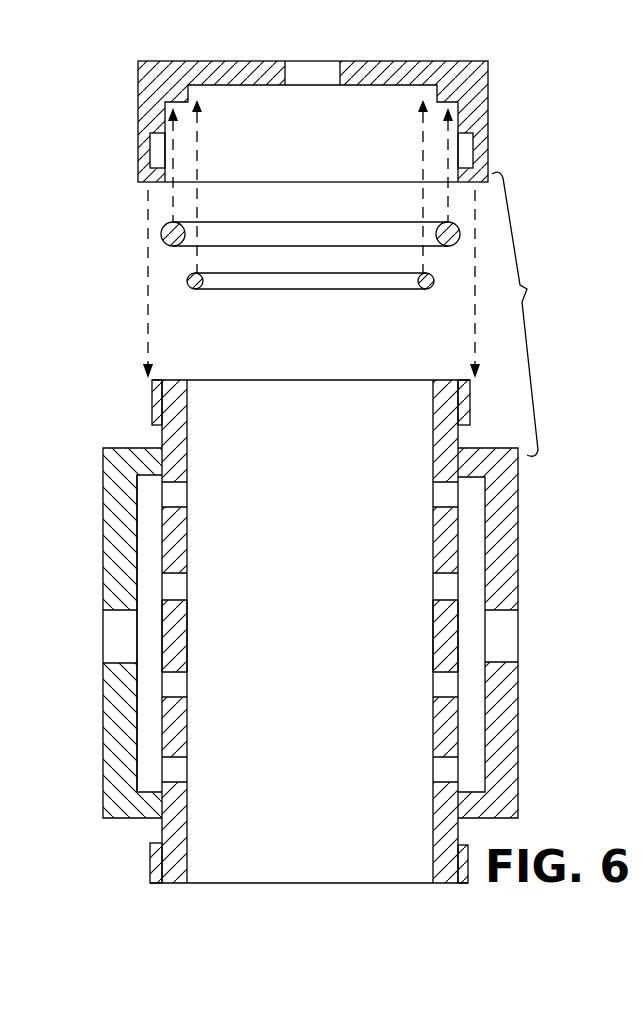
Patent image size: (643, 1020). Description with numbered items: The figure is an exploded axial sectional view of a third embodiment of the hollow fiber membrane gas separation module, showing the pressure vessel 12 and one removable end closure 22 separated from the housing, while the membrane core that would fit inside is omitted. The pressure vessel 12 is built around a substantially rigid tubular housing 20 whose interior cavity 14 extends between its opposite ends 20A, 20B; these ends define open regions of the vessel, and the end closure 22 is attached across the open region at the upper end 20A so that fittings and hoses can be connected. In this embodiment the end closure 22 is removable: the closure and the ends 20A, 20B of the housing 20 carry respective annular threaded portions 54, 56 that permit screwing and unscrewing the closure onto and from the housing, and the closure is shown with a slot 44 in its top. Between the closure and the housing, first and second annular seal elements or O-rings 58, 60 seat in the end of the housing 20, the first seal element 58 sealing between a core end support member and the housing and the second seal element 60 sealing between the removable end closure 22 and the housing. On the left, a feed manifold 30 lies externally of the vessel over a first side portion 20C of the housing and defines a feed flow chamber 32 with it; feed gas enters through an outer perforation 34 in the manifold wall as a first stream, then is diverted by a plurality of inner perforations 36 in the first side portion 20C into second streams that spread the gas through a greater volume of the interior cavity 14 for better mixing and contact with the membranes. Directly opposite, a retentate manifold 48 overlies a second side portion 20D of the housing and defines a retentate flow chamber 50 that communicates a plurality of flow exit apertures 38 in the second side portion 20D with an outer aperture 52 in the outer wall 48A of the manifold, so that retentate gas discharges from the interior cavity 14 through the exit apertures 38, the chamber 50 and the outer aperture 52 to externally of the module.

The pressure vessel 12 is at (356, 366).
The interior cavity 14 is at (297, 388).
The tubular housing 20 is at (422, 443).
The first end of housing 20A is at (182, 401).
The second end of housing 20B is at (177, 863).
The first side portion of housing 20C is at (158, 661).
The second side portion of housing 20D is at (458, 617).
The end closure 22 is at (400, 61).
The feed manifold 30 is at (93, 505).
The feed flow chamber 32 is at (146, 538).
The outer perforation 34 is at (113, 612).
The inner perforations 36 is at (178, 504).
The flow exit apertures 38 is at (443, 507).
The slot 44 is at (290, 62).
The retentate manifold 48 is at (530, 515).
The outer wall of retentate manifold 48A is at (517, 485).
The retentate flow chamber 50 is at (474, 706).
The outer aperture 52 is at (506, 616).
The annular threaded portion of end closure 54 is at (148, 150).
The annular threaded portion of housing end 56 is at (152, 402).
The first annular seal element 58 is at (284, 221).
The second annular seal element 60 is at (302, 290).